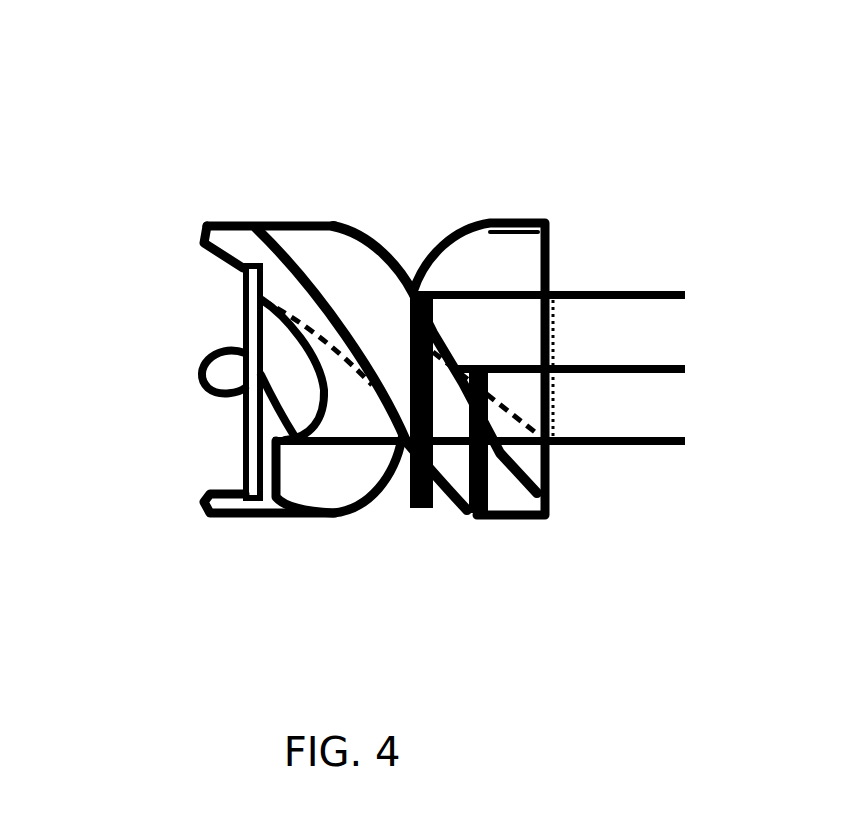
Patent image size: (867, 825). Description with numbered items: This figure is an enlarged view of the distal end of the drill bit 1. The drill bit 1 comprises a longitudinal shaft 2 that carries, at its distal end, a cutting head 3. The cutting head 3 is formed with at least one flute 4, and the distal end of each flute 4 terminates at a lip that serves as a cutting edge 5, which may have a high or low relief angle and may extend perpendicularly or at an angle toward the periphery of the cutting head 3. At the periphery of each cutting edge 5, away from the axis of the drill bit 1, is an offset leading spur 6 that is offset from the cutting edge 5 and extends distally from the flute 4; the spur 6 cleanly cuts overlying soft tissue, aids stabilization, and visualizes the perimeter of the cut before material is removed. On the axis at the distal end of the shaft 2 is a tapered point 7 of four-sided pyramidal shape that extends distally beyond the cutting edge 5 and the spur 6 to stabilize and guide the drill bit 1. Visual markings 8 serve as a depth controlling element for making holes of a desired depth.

The drill bit 1 is at (611, 142).
The longitudinal shaft 2 is at (644, 474).
The cutting head 3 is at (270, 188).
The flute 4 is at (347, 265).
The cutting edge 5 is at (243, 407).
The offset leading spur 6 is at (196, 513).
The tapered point 7 is at (207, 358).
The visual markings 8 is at (476, 512).